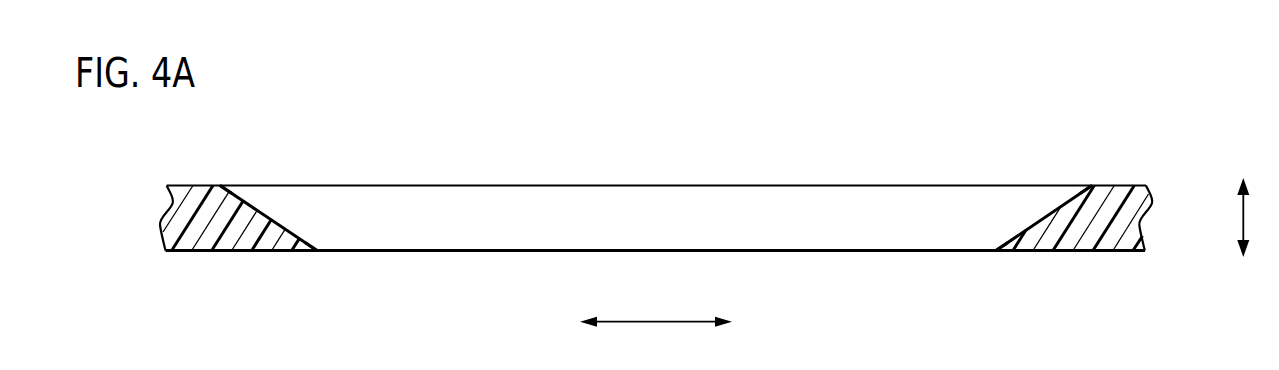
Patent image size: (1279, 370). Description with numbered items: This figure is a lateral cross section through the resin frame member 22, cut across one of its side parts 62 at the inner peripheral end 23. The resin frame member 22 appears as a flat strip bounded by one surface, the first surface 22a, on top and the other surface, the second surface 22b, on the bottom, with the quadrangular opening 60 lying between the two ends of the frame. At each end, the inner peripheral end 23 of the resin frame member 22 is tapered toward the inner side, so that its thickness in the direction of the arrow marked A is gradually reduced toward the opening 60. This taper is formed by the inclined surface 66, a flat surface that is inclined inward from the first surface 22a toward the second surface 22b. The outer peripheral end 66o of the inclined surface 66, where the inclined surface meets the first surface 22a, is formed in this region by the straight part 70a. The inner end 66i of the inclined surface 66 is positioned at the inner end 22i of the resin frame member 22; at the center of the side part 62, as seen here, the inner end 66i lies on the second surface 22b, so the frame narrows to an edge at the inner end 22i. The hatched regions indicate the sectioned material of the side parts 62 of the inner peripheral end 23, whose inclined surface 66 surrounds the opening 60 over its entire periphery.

The resin frame member 22 is at (400, 90).
The first surface 22a is at (1123, 186).
The second surface 22b is at (1122, 251).
The inner end of resin frame member 22i is at (656, 246).
The inner peripheral end 23 is at (198, 279).
The opening 60 is at (748, 207).
The side part 62 is at (247, 240).
The inclined surface 66 is at (267, 215).
The inner end of inclined surface 66i is at (317, 251).
The outer peripheral end of inclined surface 66o is at (656, 190).
The straight part 70a is at (221, 186).